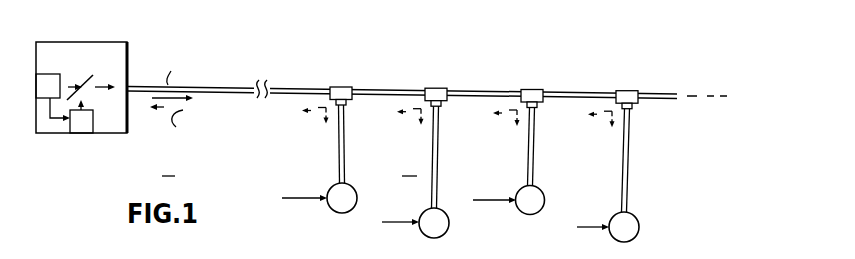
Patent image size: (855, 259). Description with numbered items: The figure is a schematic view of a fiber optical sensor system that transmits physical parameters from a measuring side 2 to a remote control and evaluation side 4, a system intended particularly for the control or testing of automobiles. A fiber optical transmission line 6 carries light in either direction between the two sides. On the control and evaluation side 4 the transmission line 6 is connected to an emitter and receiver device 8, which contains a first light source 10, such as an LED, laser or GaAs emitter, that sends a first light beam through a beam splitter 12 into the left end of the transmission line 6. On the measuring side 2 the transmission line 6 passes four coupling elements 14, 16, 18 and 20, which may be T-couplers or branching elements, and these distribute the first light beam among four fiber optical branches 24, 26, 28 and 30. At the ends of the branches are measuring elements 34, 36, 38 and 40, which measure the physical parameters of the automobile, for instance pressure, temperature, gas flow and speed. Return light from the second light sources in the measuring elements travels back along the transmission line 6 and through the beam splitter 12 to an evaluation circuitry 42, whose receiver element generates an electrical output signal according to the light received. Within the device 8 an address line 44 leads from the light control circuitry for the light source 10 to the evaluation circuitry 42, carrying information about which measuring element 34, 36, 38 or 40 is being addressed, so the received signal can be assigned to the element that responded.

The measuring side 2 is at (409, 166).
The control and evaluation side 4 is at (168, 166).
The fiber optical transmission line 6 is at (214, 88).
The emitter and receiver device 8 is at (108, 50).
The first light source 10 is at (45, 73).
The beam splitter 12 is at (82, 78).
The coupling element 14 is at (342, 88).
The coupling element 16 is at (437, 90).
The coupling element 18 is at (532, 92).
The coupling element 20 is at (627, 93).
The fiber optical branch 24 is at (344, 149).
The fiber optical branch 26 is at (438, 151).
The fiber optical branch 28 is at (533, 153).
The fiber optical branch 30 is at (629, 151).
The measuring element 34 is at (353, 189).
The measuring element 36 is at (445, 224).
The measuring element 38 is at (541, 190).
The measuring element 40 is at (637, 216).
The evaluation circuitry 42 is at (82, 133).
The address line 44 is at (48, 118).